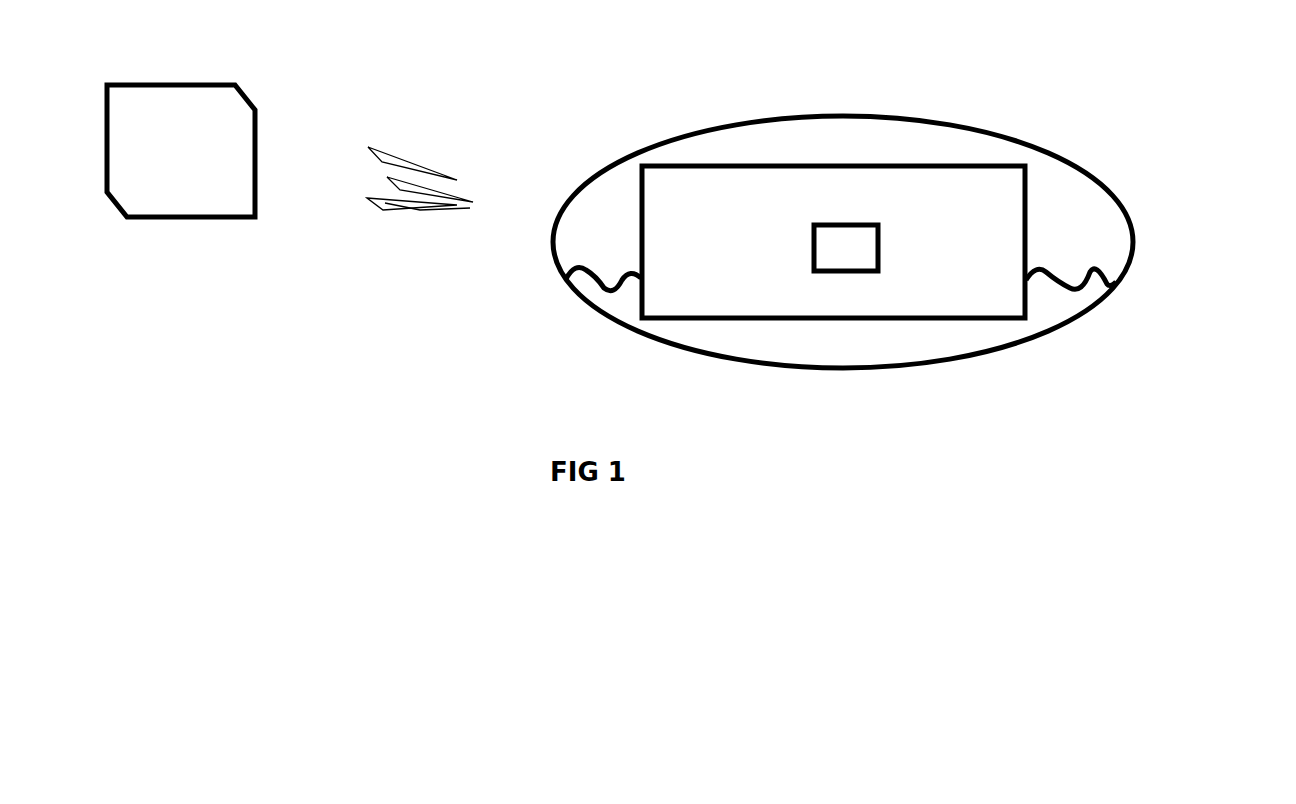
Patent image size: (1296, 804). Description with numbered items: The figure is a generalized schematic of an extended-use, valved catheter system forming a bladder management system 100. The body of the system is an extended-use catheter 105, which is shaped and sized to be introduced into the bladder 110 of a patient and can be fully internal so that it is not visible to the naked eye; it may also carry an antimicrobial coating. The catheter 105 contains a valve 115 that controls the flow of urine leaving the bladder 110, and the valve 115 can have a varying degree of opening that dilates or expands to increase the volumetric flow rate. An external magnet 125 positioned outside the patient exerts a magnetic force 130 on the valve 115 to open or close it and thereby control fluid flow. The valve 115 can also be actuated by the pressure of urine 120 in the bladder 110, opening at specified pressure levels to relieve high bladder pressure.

The bladder management system 100 is at (340, 361).
The extended-use catheter 105 is at (722, 209).
The bladder 110 is at (723, 242).
The valve 115 is at (831, 152).
The urine 120 is at (927, 300).
The external magnet 125 is at (170, 186).
The magnetic force 130 is at (400, 122).